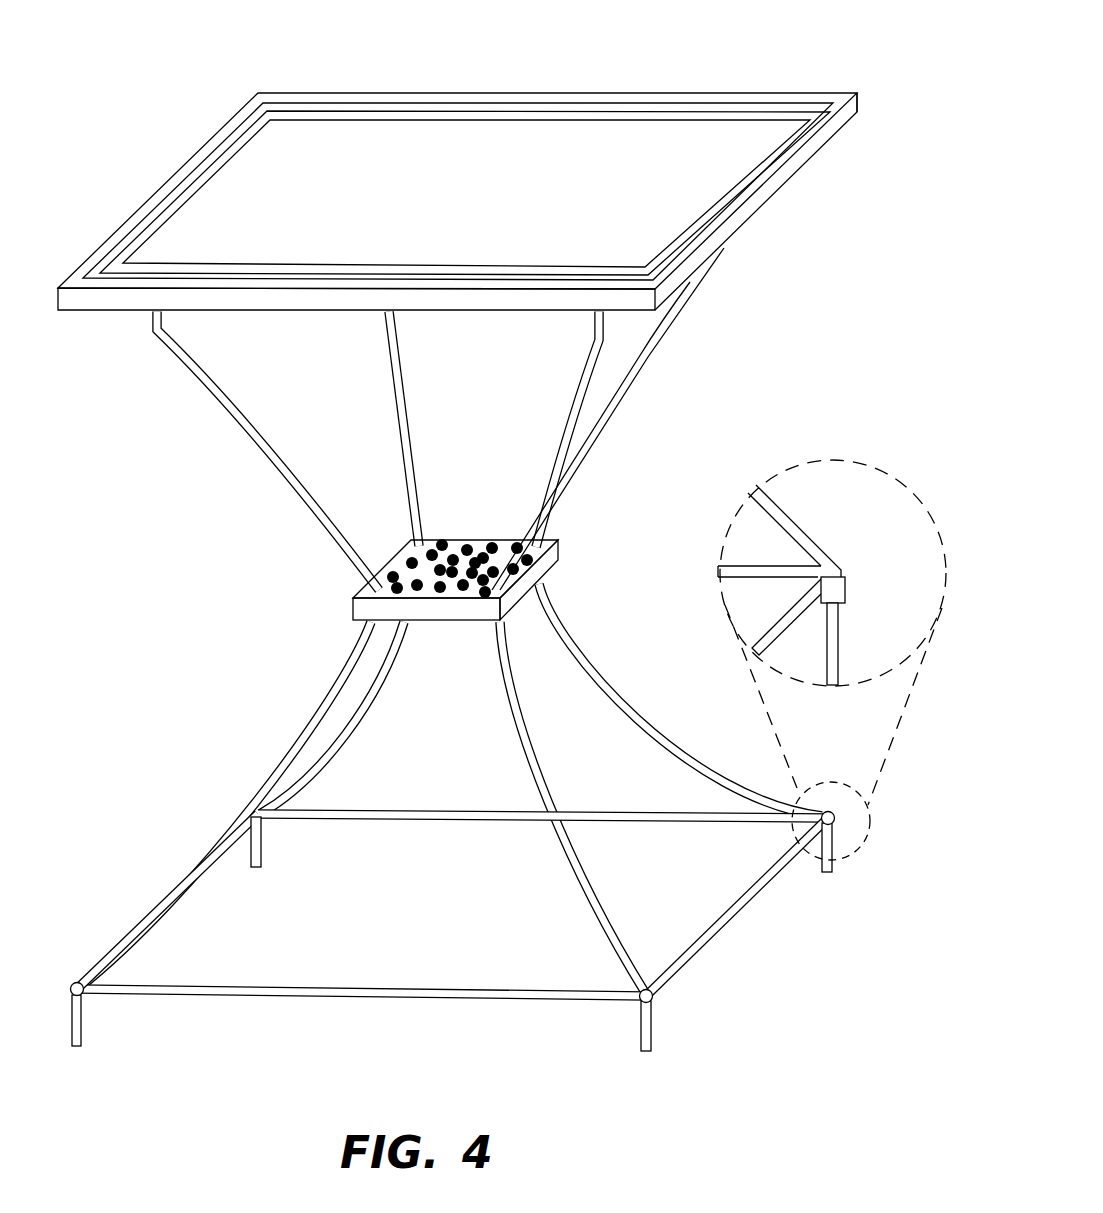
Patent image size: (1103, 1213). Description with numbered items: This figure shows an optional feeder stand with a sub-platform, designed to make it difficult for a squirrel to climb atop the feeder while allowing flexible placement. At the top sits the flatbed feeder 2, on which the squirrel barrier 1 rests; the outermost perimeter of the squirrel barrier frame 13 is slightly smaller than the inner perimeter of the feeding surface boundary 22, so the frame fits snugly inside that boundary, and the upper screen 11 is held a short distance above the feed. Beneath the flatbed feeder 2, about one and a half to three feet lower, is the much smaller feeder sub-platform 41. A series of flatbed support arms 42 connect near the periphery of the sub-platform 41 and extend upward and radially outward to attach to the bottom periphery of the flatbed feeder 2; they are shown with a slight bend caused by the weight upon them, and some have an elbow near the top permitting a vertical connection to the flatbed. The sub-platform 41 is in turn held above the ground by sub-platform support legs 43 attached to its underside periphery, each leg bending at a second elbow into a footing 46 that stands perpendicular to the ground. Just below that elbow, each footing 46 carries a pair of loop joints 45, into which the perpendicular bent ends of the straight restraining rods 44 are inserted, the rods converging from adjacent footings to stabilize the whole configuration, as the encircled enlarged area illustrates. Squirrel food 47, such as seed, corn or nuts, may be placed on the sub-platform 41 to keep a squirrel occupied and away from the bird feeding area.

The squirrel barrier 1 is at (271, 146).
The flatbed feeder 2 is at (123, 185).
The upper screen 11 is at (350, 140).
The squirrel barrier frame 13 is at (445, 120).
The feeding surface boundary 22 is at (851, 113).
The feeder sub-platform 41 is at (557, 553).
The flatbed support arms 42 is at (227, 400).
The sub-platform support legs 43 is at (329, 703).
The restraining rods 44 is at (436, 810).
The loop joints 45 is at (833, 593).
The footing 46 is at (261, 856).
The squirrel food 47 is at (397, 577).